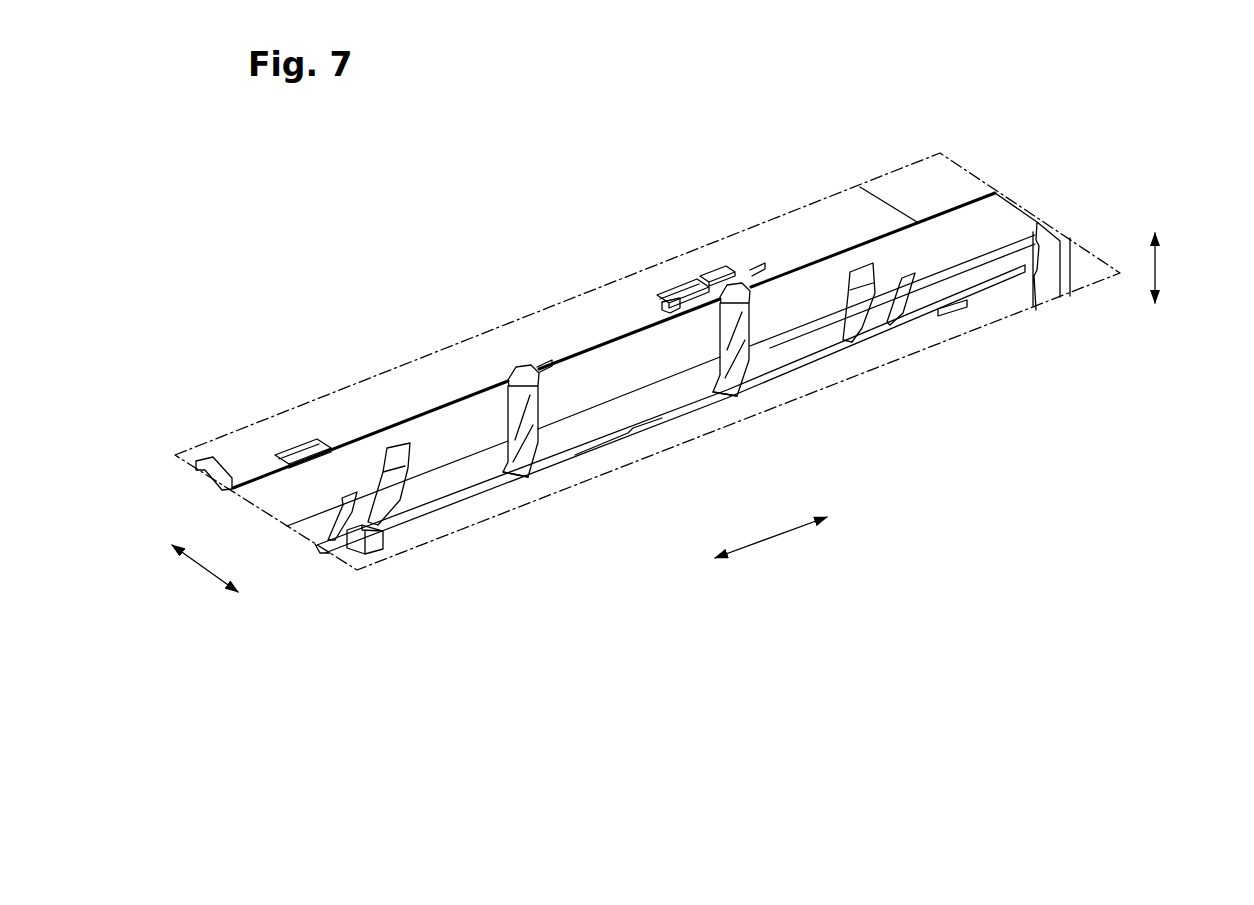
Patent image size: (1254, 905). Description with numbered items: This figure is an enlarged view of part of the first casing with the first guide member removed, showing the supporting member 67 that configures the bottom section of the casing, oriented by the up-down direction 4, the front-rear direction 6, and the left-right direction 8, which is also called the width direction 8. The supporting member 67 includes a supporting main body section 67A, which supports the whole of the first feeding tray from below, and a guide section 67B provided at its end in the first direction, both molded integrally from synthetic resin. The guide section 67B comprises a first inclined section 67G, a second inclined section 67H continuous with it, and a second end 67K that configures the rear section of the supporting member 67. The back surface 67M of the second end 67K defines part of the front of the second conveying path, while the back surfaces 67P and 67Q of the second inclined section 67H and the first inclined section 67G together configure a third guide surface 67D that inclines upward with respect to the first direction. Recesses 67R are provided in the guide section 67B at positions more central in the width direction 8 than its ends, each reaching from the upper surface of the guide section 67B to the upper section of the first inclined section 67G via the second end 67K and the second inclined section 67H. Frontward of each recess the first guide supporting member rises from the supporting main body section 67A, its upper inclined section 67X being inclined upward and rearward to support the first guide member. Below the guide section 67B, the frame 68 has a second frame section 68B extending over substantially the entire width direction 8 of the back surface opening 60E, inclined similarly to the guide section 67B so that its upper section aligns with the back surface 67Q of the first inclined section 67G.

The up-down direction 4 is at (1157, 260).
The front-rear direction 6 is at (203, 560).
The left-right direction 8 is at (780, 532).
The back surface opening 60E is at (720, 432).
The supporting member 67 is at (606, 460).
The supporting main body section 67A is at (790, 233).
The guide section 67B is at (1008, 219).
The third guide surface 67D is at (1030, 408).
The first inclined section 67G is at (666, 430).
The second inclined section 67H is at (810, 356).
The second end 67K is at (957, 200).
The back surface of the second end 67M is at (987, 233).
The back surface of the second inclined section 67P is at (985, 270).
The back surface of the first inclined section 67Q is at (940, 307).
The recesses 67R is at (519, 396).
The inclined section 67X is at (533, 467).
The frame 68 is at (508, 500).
The second frame section 68B is at (437, 507).